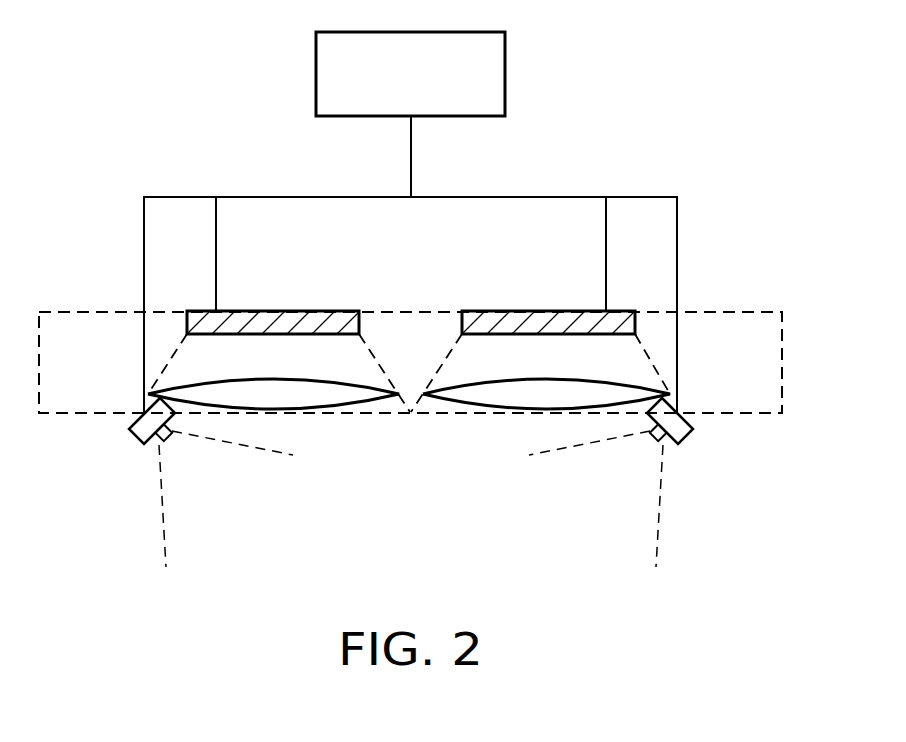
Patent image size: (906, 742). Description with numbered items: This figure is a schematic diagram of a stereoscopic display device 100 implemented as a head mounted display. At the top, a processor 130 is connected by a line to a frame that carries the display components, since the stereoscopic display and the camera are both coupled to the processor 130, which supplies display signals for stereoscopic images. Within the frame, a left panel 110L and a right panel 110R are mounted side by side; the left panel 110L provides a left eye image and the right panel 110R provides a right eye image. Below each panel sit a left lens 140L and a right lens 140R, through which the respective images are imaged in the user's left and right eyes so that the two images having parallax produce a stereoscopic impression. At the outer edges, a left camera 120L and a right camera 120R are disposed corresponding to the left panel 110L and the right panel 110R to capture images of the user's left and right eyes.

The stereoscopic display device 100 is at (748, 603).
The left panel 110L is at (279, 322).
The right panel 110R is at (547, 322).
The left camera 120L is at (136, 436).
The right camera 120R is at (686, 436).
The processor 130 is at (316, 73).
The left lens 140L is at (333, 409).
The right lens 140R is at (489, 409).